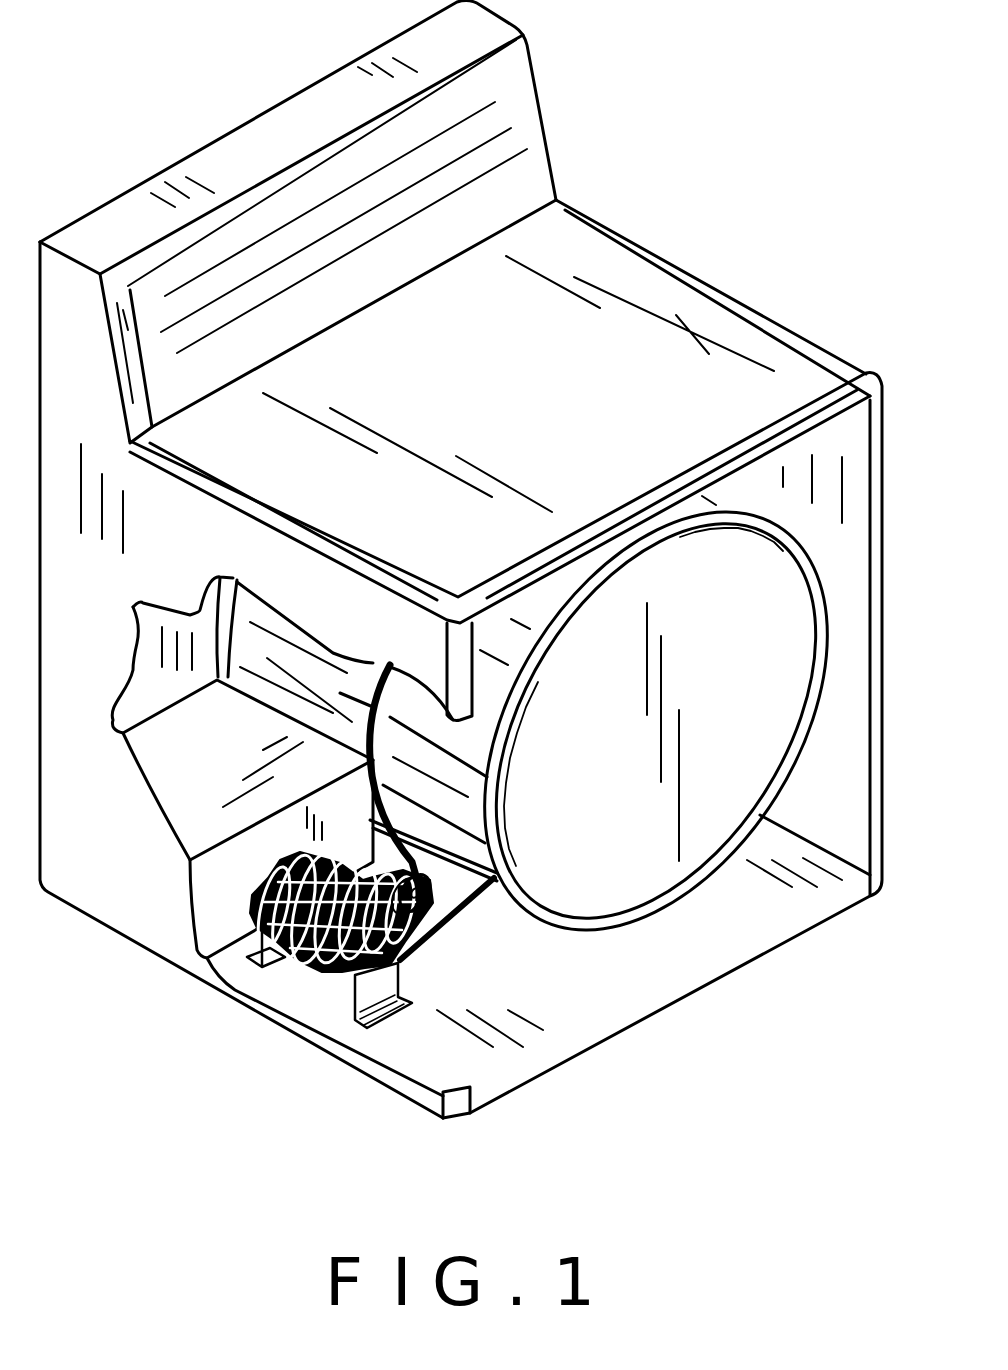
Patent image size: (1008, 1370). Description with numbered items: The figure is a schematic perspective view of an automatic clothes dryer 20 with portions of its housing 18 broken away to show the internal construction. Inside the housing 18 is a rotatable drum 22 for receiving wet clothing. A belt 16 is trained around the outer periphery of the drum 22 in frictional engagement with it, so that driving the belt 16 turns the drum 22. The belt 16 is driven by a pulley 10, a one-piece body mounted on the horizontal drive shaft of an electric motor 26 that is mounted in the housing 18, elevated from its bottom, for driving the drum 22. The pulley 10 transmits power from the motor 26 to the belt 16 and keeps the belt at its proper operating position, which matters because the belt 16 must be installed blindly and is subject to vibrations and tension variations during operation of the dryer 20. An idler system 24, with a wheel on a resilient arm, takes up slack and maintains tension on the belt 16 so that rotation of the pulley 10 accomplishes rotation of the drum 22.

The pulley 10 is at (403, 963).
The belt 16 is at (372, 732).
The housing 18 is at (137, 947).
The dryer 20 is at (638, 190).
The drum 22 is at (672, 900).
The idler system 24 is at (437, 910).
The electric motor 26 is at (298, 952).